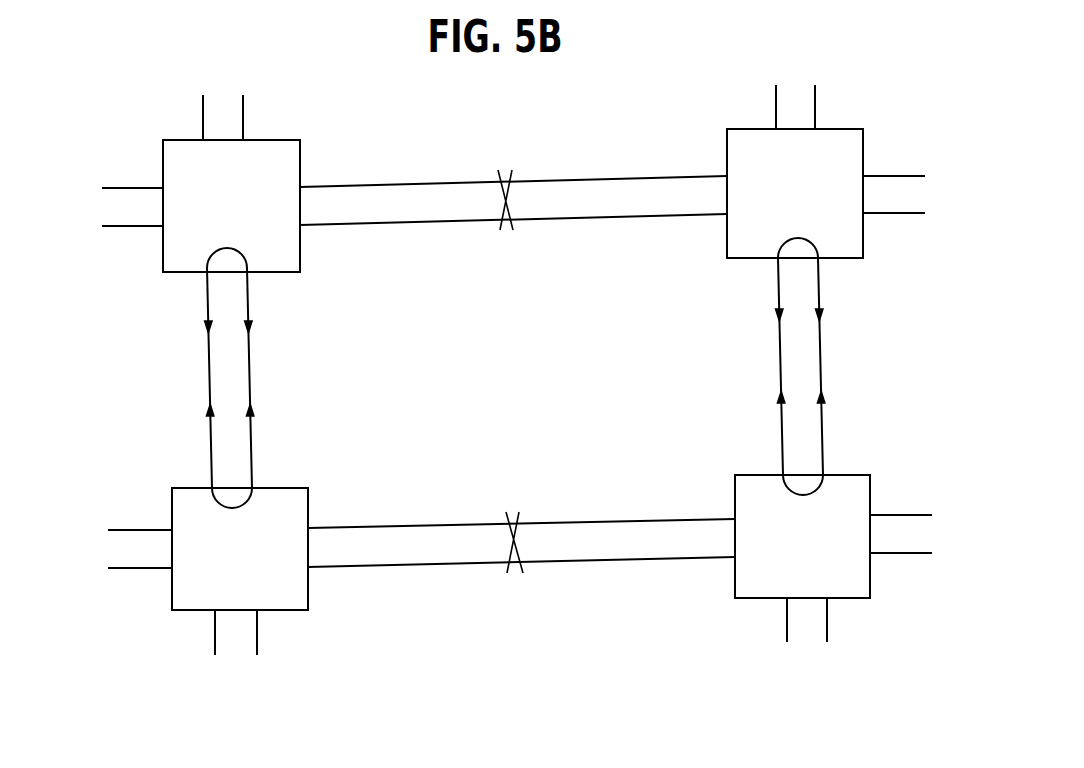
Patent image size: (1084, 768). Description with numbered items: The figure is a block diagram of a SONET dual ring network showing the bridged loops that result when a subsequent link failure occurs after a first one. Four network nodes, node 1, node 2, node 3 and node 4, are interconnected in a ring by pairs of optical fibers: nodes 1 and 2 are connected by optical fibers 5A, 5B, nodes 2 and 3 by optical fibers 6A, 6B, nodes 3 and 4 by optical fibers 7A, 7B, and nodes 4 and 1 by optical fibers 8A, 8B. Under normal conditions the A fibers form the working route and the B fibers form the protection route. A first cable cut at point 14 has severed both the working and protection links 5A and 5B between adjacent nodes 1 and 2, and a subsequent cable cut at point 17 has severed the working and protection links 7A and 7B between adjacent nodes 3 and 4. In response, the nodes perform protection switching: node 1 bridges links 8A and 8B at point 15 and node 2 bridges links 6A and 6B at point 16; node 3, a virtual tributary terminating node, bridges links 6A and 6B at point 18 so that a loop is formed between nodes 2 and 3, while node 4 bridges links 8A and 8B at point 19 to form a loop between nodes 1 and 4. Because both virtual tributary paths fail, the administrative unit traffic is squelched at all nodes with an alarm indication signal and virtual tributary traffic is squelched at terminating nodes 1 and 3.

The node 1 is at (272, 139).
The node 2 is at (846, 129).
The node 3 is at (862, 474).
The node 4 is at (290, 487).
The optical fiber 5A is at (583, 176).
The optical fiber 5B is at (583, 214).
The optical fiber 6A is at (820, 370).
The optical fiber 6B is at (780, 370).
The optical fiber 7A is at (593, 558).
The optical fiber 7B is at (593, 519).
The optical fiber 8A is at (210, 384).
The optical fiber 8B is at (250, 384).
The first cable cut point 14 is at (507, 166).
The bridging point 15 is at (224, 248).
The bridging point 16 is at (797, 238).
The subsequent cable cut point 17 is at (512, 508).
The bridging point 18 is at (799, 494).
The bridging point 19 is at (233, 508).